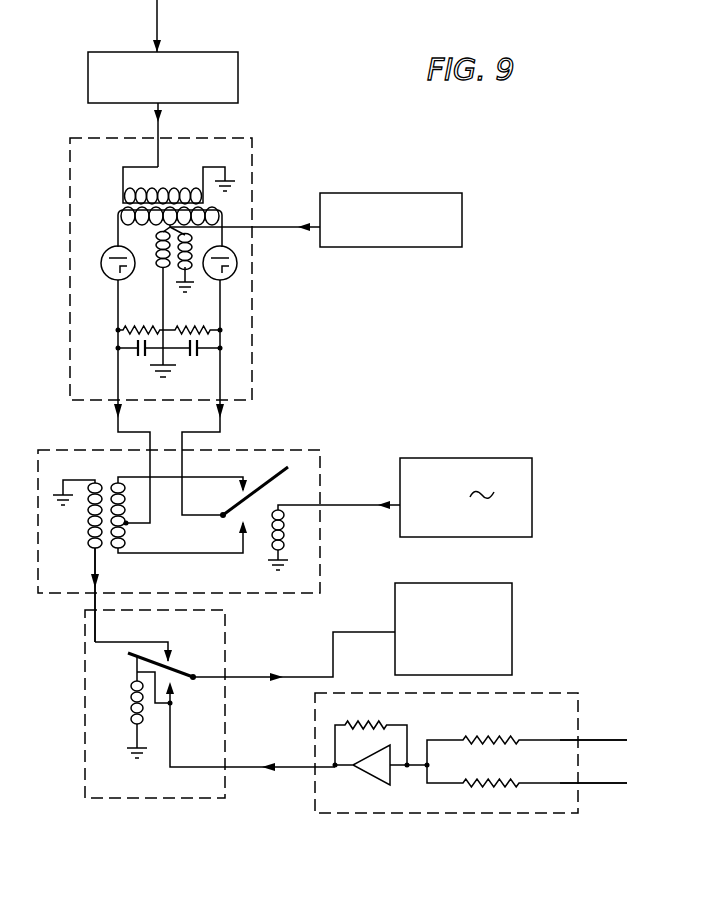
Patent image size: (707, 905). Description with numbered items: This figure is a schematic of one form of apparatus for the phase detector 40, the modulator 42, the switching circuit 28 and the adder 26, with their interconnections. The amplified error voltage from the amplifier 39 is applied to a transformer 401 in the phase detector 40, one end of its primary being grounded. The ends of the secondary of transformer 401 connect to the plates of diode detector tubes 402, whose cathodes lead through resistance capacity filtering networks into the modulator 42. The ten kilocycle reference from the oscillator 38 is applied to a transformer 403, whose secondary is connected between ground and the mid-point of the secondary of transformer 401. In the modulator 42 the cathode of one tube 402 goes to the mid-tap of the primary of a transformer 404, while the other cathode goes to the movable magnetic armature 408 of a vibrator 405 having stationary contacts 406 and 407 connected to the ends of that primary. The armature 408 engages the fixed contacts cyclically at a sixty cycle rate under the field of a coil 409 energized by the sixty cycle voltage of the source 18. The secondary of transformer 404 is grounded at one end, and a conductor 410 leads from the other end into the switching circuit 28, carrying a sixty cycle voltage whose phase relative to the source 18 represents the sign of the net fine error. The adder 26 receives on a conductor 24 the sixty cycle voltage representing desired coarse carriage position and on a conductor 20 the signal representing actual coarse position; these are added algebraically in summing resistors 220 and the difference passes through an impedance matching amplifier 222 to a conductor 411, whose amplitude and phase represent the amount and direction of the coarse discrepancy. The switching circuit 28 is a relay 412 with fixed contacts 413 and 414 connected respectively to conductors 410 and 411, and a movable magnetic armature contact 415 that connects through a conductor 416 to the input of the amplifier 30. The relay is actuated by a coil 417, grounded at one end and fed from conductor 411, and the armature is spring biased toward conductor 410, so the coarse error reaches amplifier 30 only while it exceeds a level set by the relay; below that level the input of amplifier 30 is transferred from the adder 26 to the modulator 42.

The amplifier 39 is at (217, 52).
The phase detector 40 is at (252, 150).
The transformer 401 is at (122, 204).
The transformer 403 is at (192, 218).
The diode detector tubes 402 is at (213, 280).
The oscillator 38 is at (441, 193).
The modulator circuit 42 is at (280, 450).
The transformer 404 is at (111, 483).
The vibrator 405 is at (237, 518).
The stationary contact 406 is at (240, 488).
The stationary contact 407 is at (241, 550).
The movable magnetic armature 408 is at (268, 482).
The coil 409 is at (283, 527).
The source 18 is at (493, 458).
The conductor 410 is at (92, 593).
The amplifier 30 is at (478, 583).
The fixed contact 413 is at (168, 648).
The switching circuit 28 is at (229, 657).
The conductor 416 is at (285, 677).
The movable magnetic armature contact 415 is at (132, 661).
The relay 412 is at (128, 700).
The fixed contact 414 is at (172, 718).
The coil 417 is at (143, 716).
The conductor 411 is at (303, 767).
The adder 26 is at (590, 686).
The conductor 24 is at (580, 740).
The summing resistors 220 is at (527, 746).
The conductor 20 is at (585, 783).
The amplifier 222 is at (370, 770).